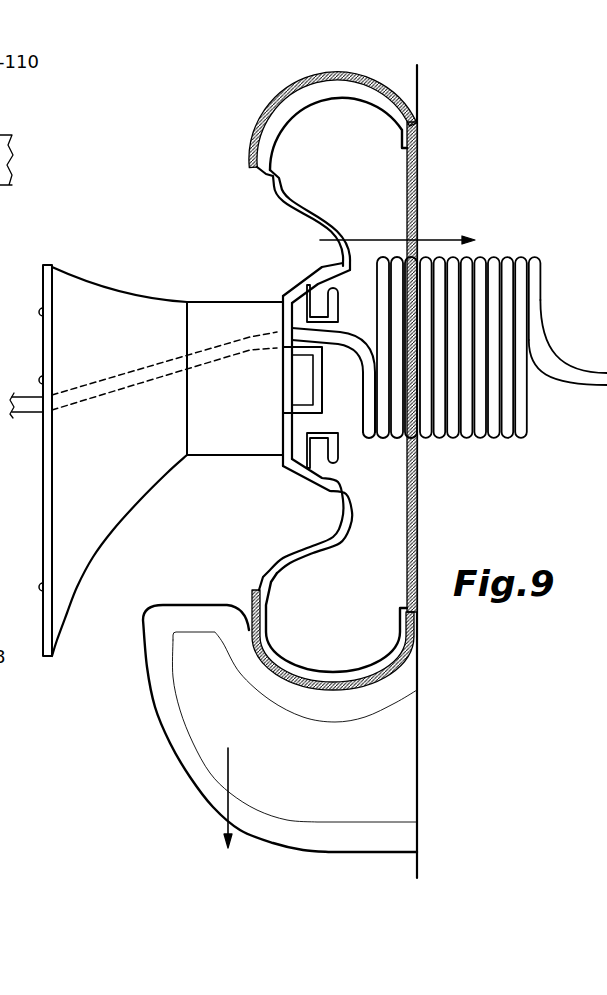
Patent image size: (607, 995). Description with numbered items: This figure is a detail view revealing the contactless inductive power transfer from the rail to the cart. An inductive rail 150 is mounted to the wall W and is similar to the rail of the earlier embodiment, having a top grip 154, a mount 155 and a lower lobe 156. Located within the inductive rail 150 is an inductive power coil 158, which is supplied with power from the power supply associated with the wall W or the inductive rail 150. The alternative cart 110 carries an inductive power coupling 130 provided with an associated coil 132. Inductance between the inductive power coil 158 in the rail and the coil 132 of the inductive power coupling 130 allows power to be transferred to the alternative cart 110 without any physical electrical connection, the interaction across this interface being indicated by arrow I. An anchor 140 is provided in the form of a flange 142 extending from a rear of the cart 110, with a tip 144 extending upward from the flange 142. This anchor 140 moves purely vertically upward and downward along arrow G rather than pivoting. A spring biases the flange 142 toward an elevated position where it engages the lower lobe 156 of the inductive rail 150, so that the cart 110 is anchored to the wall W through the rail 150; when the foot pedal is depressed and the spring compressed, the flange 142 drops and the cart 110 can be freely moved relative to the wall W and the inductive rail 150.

The alternative cart 110 is at (498, 164).
The inductive power coupling 130 is at (492, 380).
The coil 132 is at (512, 256).
The anchor 140 is at (256, 728).
The flange 142 is at (344, 779).
The tip 144 is at (215, 674).
The inductive rail 150 is at (146, 421).
The top grip 154 is at (350, 164).
The mount 155 is at (137, 444).
The lower lobe 156 is at (354, 622).
The inductive power coil 158 is at (376, 275).
The interface direction I is at (434, 240).
The arrow G is at (228, 789).
The wall W is at (28, 451).